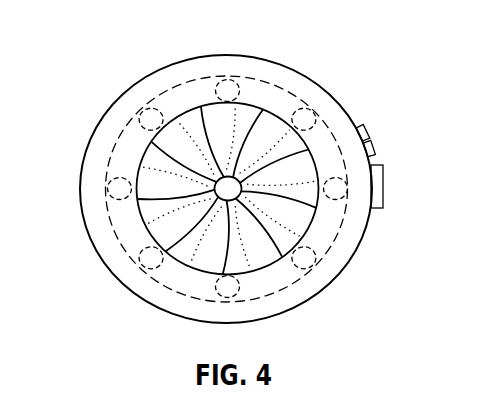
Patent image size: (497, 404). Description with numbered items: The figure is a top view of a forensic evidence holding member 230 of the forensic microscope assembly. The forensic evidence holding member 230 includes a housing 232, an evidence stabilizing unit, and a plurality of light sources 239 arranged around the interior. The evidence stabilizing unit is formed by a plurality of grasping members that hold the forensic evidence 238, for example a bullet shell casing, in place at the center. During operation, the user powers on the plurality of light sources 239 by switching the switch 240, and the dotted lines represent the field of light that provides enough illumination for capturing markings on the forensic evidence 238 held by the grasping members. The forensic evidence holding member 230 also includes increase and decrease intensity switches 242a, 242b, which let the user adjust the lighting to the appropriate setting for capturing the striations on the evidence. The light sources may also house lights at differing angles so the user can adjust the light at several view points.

The forensic evidence holding member 230 is at (88, 79).
The housing 232 is at (355, 232).
The forensic evidence 238 is at (222, 176).
The plurality of light sources 239 is at (303, 110).
The switch 240 is at (383, 187).
The increase intensity switch 242a is at (373, 144).
The decrease intensity switch 242b is at (367, 127).